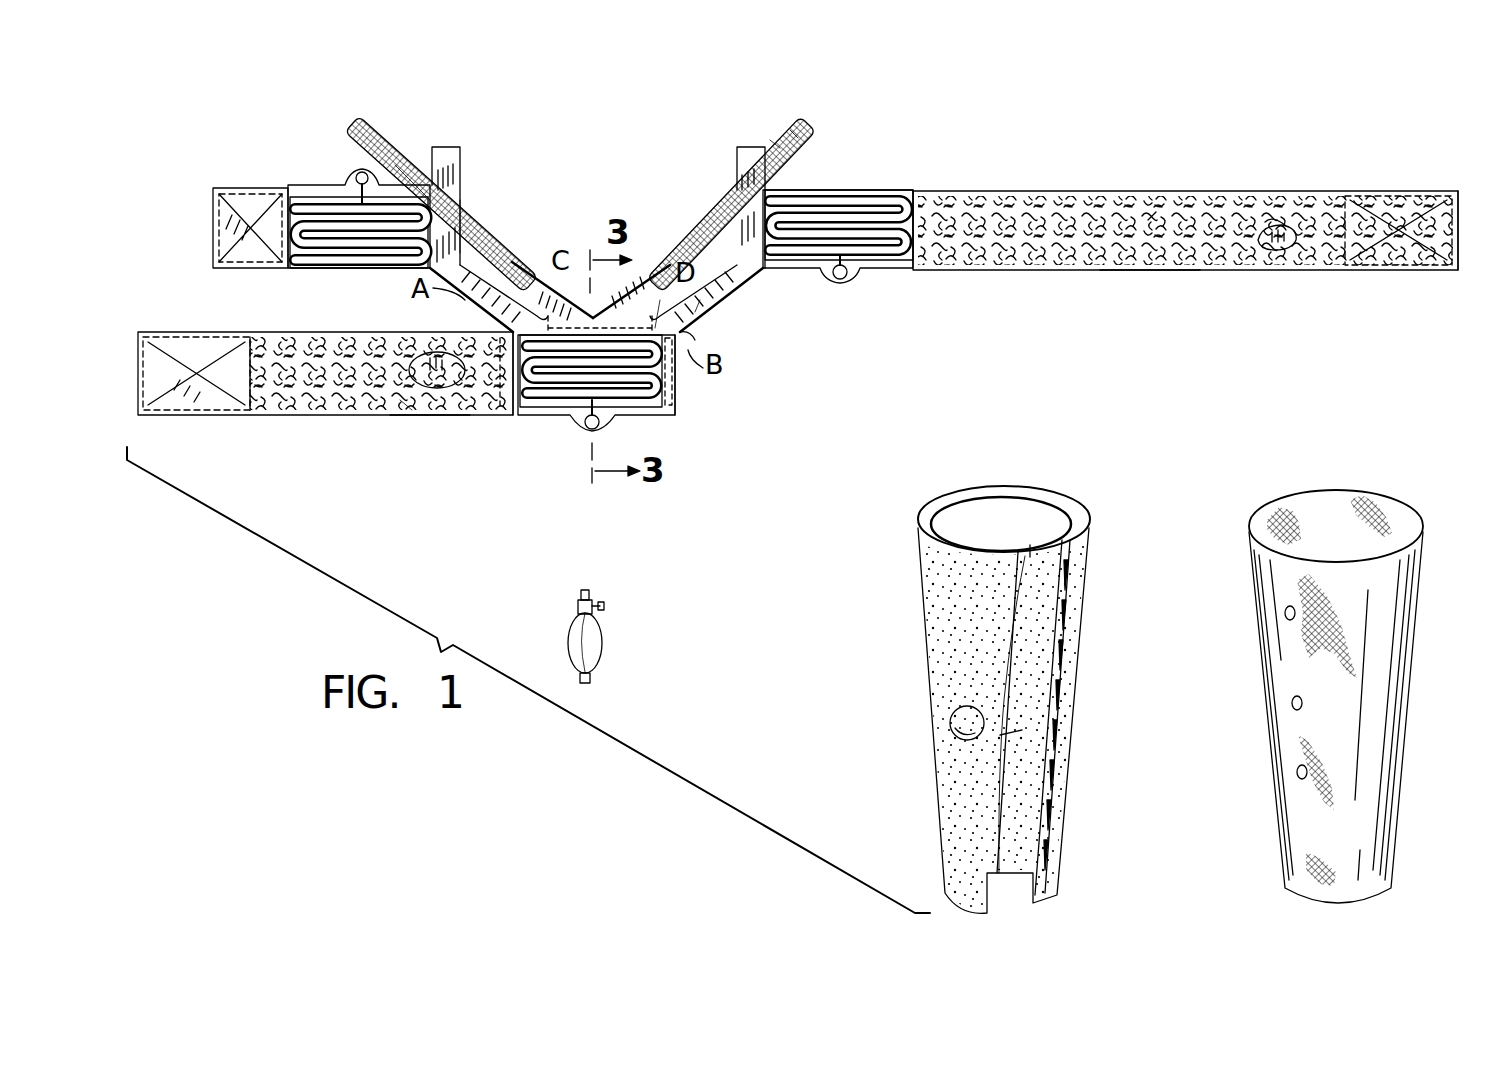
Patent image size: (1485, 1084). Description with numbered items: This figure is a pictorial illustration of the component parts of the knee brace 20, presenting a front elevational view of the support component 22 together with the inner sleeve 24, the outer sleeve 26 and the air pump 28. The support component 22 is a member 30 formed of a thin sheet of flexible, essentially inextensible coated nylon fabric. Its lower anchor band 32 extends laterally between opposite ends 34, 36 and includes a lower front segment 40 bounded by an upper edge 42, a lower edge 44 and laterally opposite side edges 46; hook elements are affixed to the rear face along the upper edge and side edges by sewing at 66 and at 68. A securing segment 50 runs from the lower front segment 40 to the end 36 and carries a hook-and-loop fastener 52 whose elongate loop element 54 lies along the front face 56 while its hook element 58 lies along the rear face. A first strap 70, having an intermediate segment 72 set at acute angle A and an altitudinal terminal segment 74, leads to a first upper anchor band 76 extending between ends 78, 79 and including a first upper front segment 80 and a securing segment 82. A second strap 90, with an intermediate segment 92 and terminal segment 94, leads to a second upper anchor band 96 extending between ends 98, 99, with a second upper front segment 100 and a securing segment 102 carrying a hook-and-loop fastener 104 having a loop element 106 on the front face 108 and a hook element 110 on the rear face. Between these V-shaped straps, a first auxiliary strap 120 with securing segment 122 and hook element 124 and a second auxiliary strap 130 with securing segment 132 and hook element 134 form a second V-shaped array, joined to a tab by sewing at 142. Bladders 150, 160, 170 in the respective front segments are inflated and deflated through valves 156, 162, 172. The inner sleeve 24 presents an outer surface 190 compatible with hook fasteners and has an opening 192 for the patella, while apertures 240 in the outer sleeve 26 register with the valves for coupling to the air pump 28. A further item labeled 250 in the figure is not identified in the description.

The knee brace 20 is at (444, 520).
The support component 22 is at (330, 418).
The inner sleeve 24 is at (923, 597).
The outer sleeve 26 is at (1408, 680).
The air pump 28 is at (562, 630).
The member 30 is at (445, 416).
The lower anchor band 32 is at (408, 416).
The end 34 is at (679, 402).
The end 36 is at (138, 345).
The lower front segment 40 is at (630, 414).
The upper edge 42 is at (700, 338).
The lower edge 44 is at (512, 418).
The side edges 46 is at (674, 380).
The securing segment 50 is at (362, 332).
The hook-and-loop fastener 52 is at (258, 340).
The loop element 54 is at (272, 410).
The front face 56 is at (415, 372).
The hook element 58 is at (185, 340).
The sewing 66 is at (583, 308).
The sewing 68 is at (490, 330).
The first strap 70 is at (515, 265).
The intermediate segment 72 is at (525, 275).
The terminal segment 74 is at (455, 210).
The first upper anchor band 76 is at (270, 192).
The end 78 is at (462, 222).
The end 79 is at (213, 215).
The first upper front segment 80 is at (302, 192).
The securing segment 82 is at (232, 200).
The second strap 90 is at (740, 292).
The intermediate segment 92 is at (712, 312).
The terminal segment 94 is at (738, 160).
The second upper anchor band 96 is at (1036, 195).
The end 98 is at (728, 200).
The end 99 is at (1460, 200).
The second upper front segment 100 is at (870, 268).
The securing segment 102 is at (1118, 270).
The hook-and-loop fastener 104 is at (1150, 220).
The loop element 106 is at (1275, 218).
The front face 108 is at (1265, 255).
The hook element 110 is at (1380, 270).
The first auxiliary strap 120 is at (380, 140).
The securing segment 122 is at (460, 170).
The hook element 124 is at (412, 152).
The second auxiliary strap 130 is at (812, 130).
The securing segment 132 is at (795, 115).
The hook element 134 is at (770, 138).
The sewing 142 is at (645, 300).
The bladder 150 is at (560, 408).
The valve 156 is at (584, 432).
The bladder 160 is at (325, 262).
The valve 162 is at (358, 173).
The bladder 170 is at (850, 200).
The valve 172 is at (845, 281).
The outer surface 190 is at (950, 655).
The opening 192 is at (950, 725).
The apertures 240 is at (1284, 615).
The strap mounting strip 250 is at (447, 150).